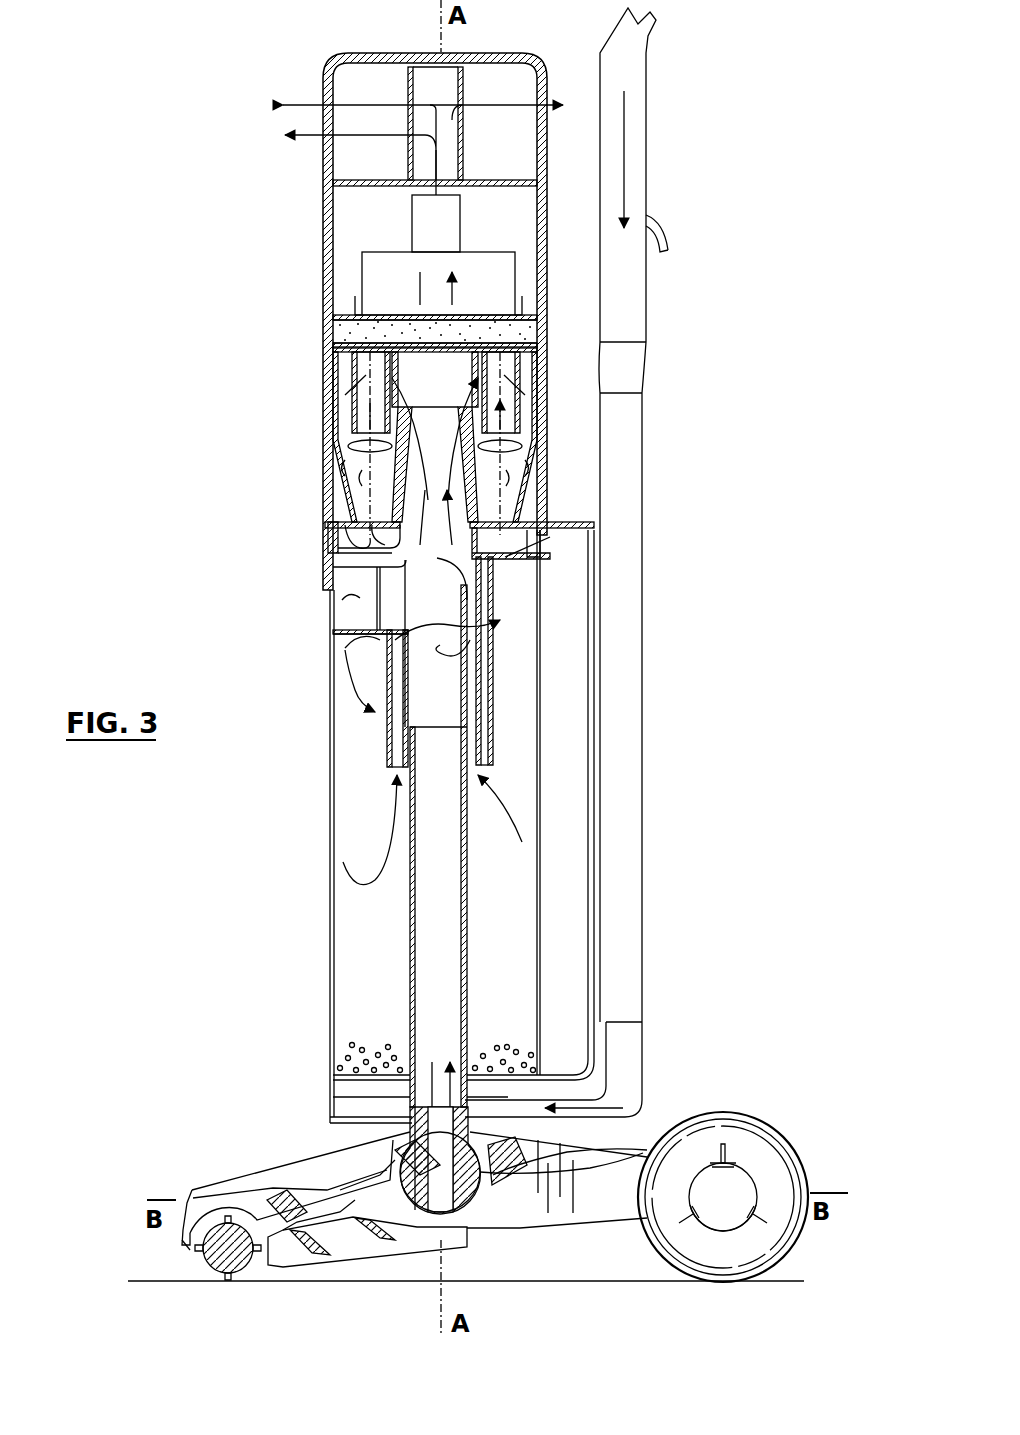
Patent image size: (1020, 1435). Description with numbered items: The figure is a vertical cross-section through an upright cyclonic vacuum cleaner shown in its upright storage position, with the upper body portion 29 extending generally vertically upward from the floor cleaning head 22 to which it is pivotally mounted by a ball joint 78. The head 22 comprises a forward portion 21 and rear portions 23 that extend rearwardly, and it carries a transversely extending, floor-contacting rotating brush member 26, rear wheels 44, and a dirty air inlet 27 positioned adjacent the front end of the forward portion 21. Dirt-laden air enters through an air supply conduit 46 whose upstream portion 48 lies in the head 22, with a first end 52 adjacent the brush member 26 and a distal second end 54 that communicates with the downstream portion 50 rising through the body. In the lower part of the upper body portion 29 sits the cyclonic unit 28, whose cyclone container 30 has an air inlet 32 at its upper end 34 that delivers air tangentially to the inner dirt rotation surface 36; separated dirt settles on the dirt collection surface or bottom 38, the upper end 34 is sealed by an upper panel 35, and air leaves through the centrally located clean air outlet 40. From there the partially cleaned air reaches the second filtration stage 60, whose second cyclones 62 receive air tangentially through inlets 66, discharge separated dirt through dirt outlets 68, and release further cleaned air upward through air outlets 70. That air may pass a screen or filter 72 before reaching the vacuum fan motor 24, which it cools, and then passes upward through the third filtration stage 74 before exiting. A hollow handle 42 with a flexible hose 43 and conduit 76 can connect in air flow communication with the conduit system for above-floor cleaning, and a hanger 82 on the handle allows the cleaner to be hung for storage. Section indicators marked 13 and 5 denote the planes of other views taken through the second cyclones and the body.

The forward portion 21 is at (220, 1180).
The floor cleaning head 22 is at (186, 1172).
The rear portions 23 is at (593, 1210).
The vacuum fan motor 24 is at (378, 268).
The rotating brush member 26 is at (232, 1266).
The dirty air inlet 27 is at (186, 1256).
The cyclonic unit 28 is at (345, 912).
The upper body portion 29 is at (275, 601).
The cyclone container 30 is at (336, 820).
The air inlet 32 is at (353, 597).
The upper end 34 is at (350, 585).
The upper panel 35 is at (340, 530).
The inner dirt rotation surface 36 is at (345, 768).
The dirt collection surface or bottom 38 is at (332, 1046).
The clean air outlet 40 is at (340, 558).
The handle 42 is at (632, 122).
The flexible hose 43 is at (630, 746).
The rear wheels 44 is at (740, 1255).
The air supply conduit 46 is at (307, 1212).
The upstream portion 48 is at (350, 1205).
The downstream portion 50 is at (468, 902).
The first end 52 is at (283, 1230).
The second end 54 is at (400, 1090).
The second filtration stage 60 is at (360, 396).
The second cyclones 62 is at (335, 430).
The inlets 66 is at (360, 354).
The dirt outlets 68 is at (335, 500).
The air outlets 70 is at (368, 405).
The screen or filter 72 is at (338, 327).
The third filtration stage 74 is at (352, 157).
The conduit 76 is at (635, 1060).
The ball joint 78 is at (643, 1153).
The hanger 82 is at (670, 230).
The section line 13 is at (323, 428).
The section line 5 is at (330, 608).